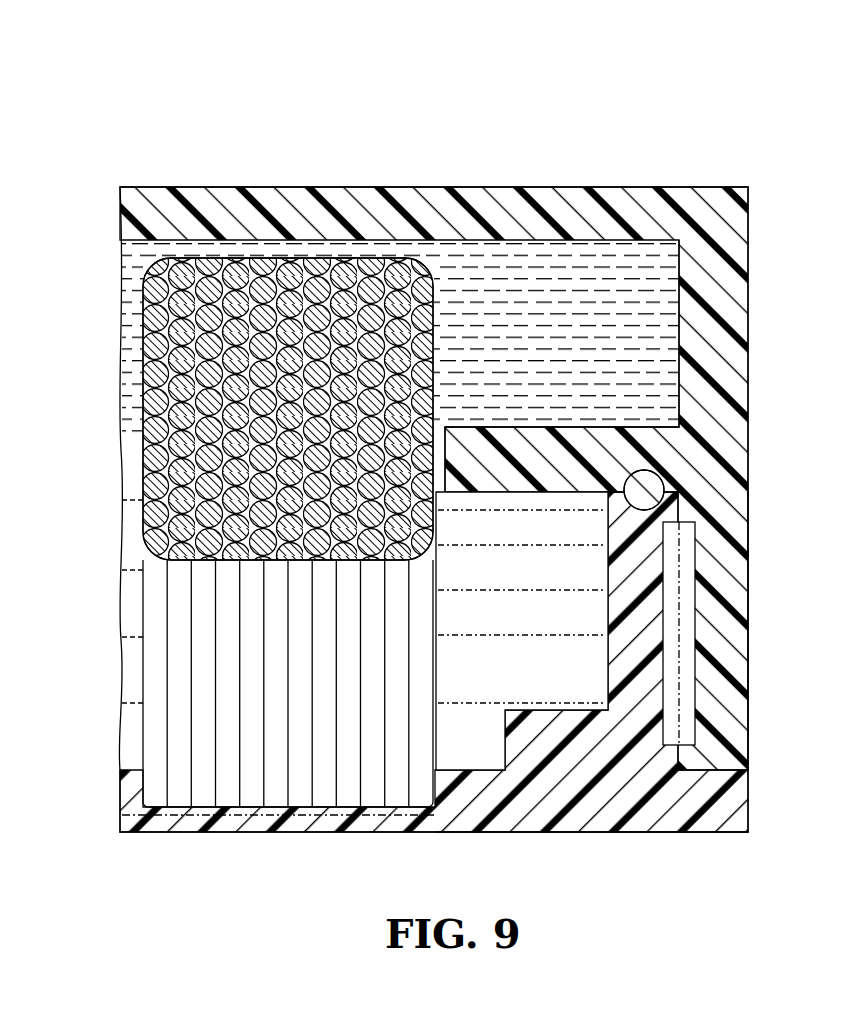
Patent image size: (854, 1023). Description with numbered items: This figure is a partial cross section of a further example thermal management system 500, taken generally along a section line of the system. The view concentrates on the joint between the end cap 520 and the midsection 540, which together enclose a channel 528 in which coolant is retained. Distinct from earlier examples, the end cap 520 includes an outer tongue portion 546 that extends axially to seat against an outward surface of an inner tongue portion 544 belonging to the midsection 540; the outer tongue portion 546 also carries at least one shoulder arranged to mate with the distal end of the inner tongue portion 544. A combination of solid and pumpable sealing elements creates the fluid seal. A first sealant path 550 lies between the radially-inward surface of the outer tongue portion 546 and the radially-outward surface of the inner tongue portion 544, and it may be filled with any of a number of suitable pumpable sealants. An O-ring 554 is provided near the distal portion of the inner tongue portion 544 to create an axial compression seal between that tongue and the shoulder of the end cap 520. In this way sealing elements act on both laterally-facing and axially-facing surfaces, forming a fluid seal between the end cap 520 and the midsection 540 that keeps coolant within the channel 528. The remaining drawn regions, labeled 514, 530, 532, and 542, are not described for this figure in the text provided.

The thermal management system 500 is at (632, 76).
The housing base 514 is at (300, 815).
The end cap 520 is at (713, 265).
The channel 528 is at (579, 348).
The insulation 530 is at (208, 655).
The conductor strands 532 is at (150, 305).
The midsection 540 is at (608, 783).
The base plate 542 is at (737, 803).
The inner tongue portion 544 is at (642, 640).
The outer tongue portion 546 is at (732, 565).
The first sealant path 550 is at (697, 627).
The O-ring 554 is at (660, 478).